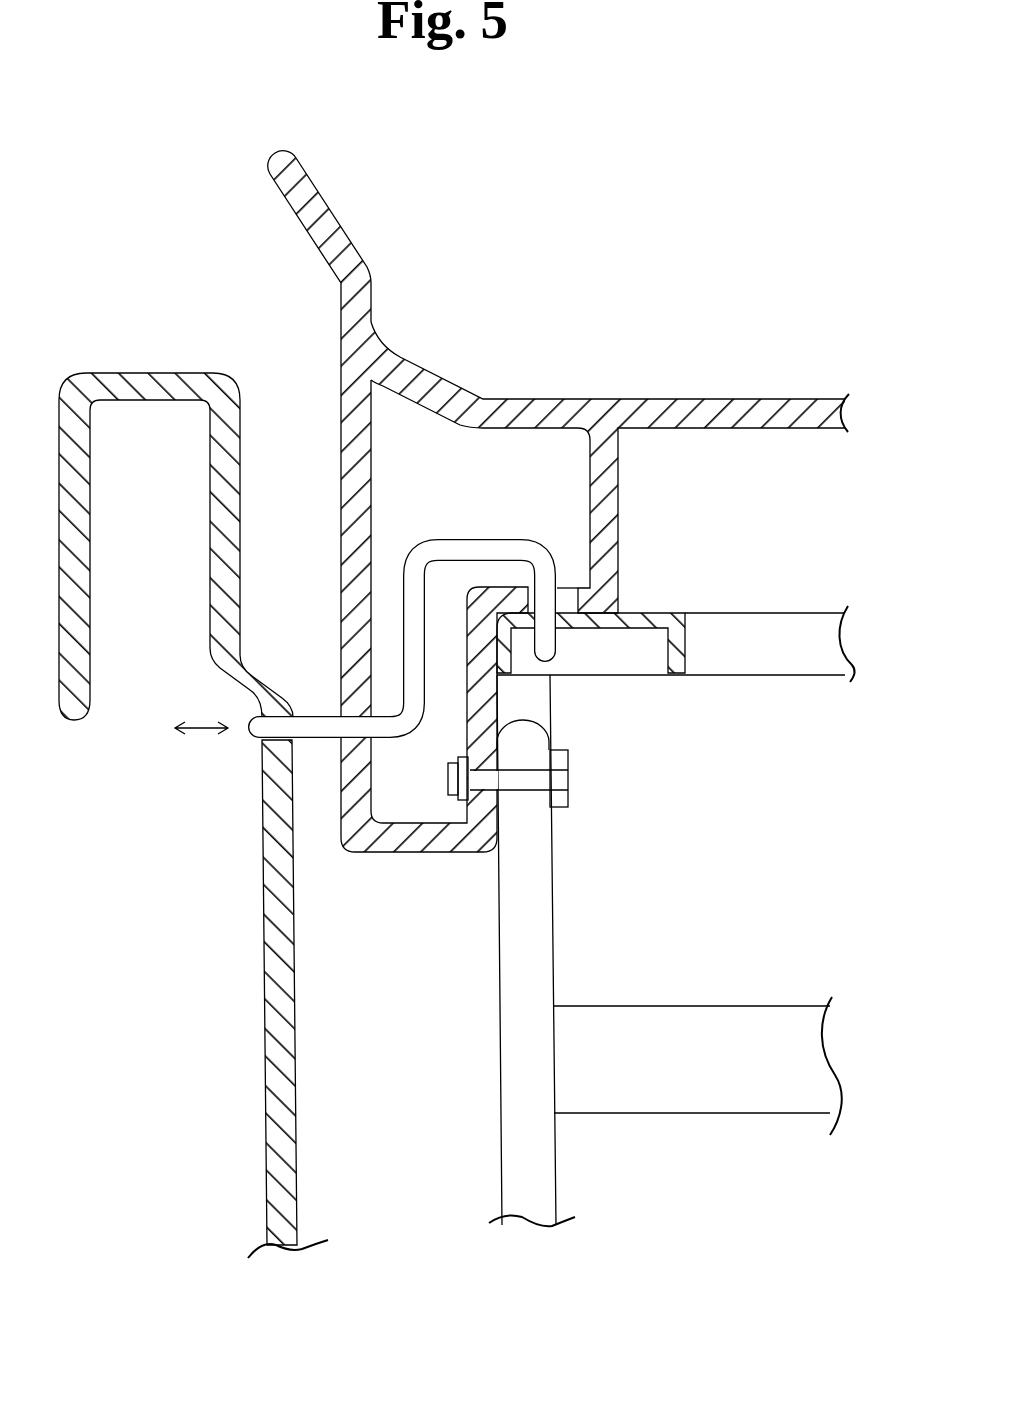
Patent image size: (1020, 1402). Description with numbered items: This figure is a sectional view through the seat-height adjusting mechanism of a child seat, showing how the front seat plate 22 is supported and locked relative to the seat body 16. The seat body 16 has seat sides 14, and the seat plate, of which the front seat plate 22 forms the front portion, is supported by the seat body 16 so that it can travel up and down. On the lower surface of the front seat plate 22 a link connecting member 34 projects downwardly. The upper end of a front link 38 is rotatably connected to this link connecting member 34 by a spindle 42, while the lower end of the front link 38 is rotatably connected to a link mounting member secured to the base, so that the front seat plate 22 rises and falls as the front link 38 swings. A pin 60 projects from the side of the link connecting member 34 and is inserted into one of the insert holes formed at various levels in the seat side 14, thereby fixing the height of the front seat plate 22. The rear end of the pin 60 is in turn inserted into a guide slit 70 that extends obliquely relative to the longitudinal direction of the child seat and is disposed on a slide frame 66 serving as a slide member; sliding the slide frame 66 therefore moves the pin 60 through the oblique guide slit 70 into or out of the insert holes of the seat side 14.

The seat side 14 is at (265, 1000).
The seat body 16 is at (257, 1075).
The front seat plate 22 is at (683, 400).
The link connecting member 34 is at (418, 855).
The front link 38 is at (545, 958).
The spindle 42 is at (570, 778).
The pin 60 is at (250, 745).
The slide frame 66 is at (645, 612).
The guide slit 70 is at (557, 628).